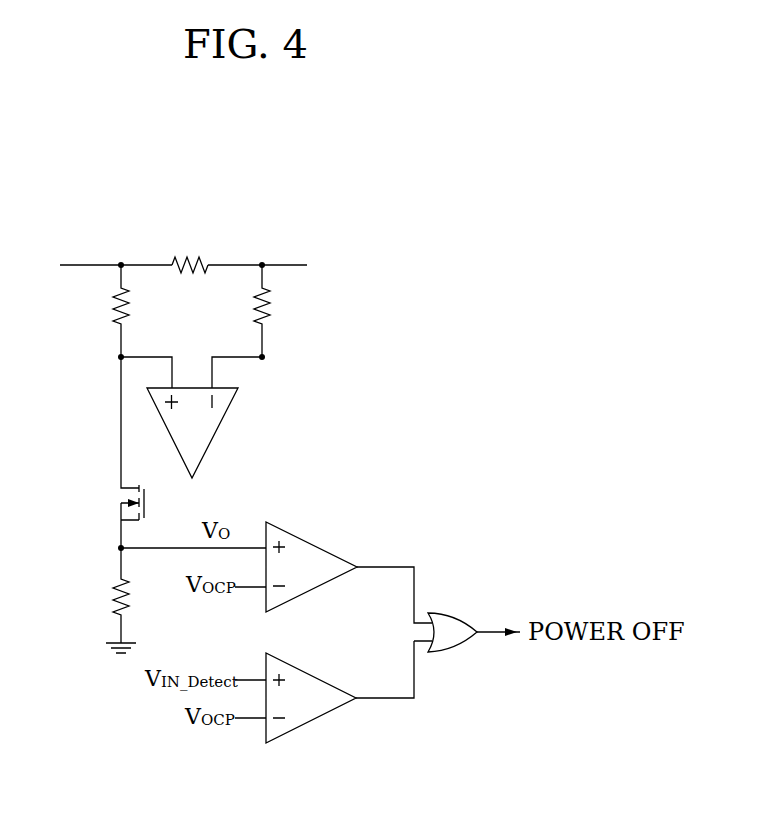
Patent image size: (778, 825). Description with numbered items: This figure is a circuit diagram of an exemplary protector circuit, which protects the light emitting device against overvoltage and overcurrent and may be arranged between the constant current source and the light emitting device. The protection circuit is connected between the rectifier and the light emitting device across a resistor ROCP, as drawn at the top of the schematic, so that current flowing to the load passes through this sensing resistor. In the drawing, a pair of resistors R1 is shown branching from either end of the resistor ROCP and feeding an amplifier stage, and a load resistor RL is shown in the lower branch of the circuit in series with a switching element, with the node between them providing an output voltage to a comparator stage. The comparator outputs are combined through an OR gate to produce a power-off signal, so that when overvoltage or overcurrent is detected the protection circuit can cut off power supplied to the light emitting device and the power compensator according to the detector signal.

The resistor ROCP is at (300, 234).
The divider resistor R1 is at (191, 311).
The load resistor RL is at (102, 600).